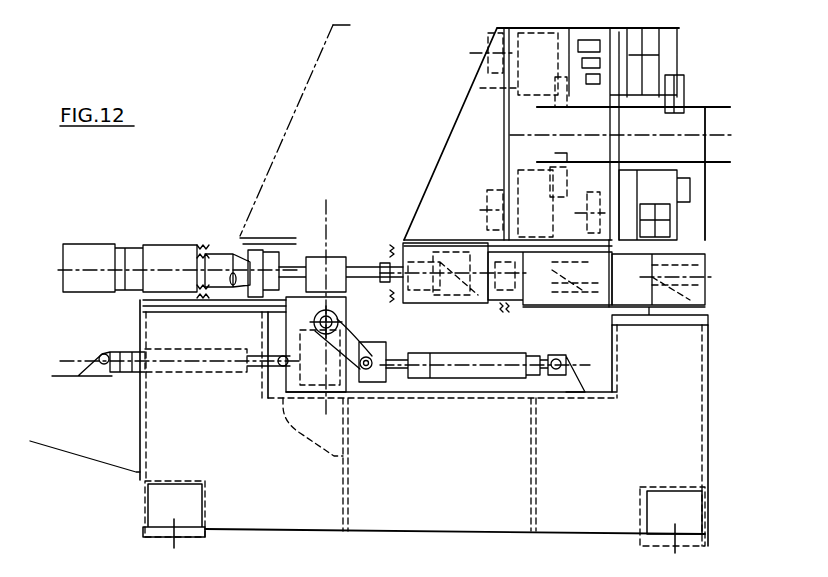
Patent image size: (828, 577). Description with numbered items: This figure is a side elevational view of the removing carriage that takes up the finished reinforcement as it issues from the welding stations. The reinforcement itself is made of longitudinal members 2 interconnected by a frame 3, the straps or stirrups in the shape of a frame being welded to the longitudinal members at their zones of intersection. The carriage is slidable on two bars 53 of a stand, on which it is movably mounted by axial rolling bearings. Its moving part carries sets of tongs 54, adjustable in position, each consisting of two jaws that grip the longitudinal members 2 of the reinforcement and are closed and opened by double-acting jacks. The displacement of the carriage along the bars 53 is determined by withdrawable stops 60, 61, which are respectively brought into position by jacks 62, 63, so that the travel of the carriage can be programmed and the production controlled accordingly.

The longitudinal members 2 is at (632, 107).
The frame 3 is at (705, 121).
The sets of tongs 54 is at (563, 92).
The bars 53 is at (206, 263).
The withdrawable stop 60 is at (371, 350).
The withdrawable stop 61 is at (320, 266).
The jack 62 is at (450, 372).
The jack 63 is at (170, 357).